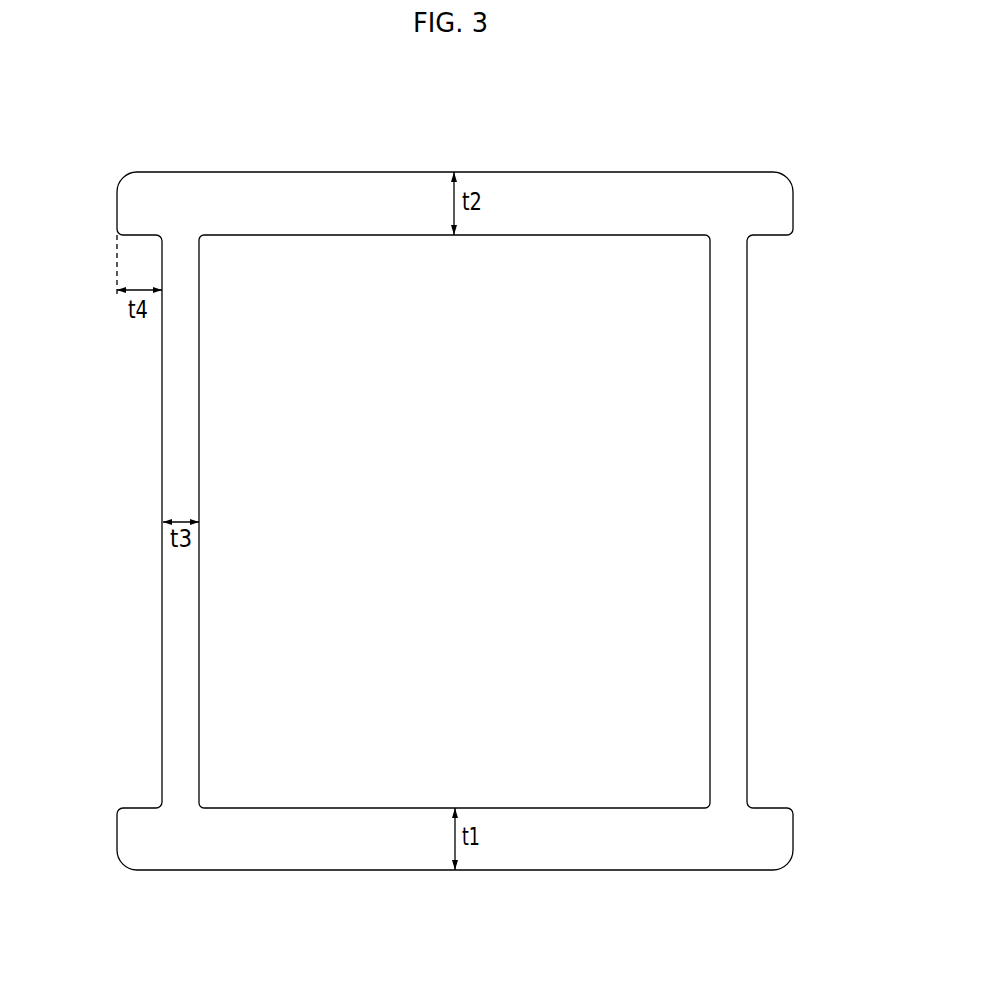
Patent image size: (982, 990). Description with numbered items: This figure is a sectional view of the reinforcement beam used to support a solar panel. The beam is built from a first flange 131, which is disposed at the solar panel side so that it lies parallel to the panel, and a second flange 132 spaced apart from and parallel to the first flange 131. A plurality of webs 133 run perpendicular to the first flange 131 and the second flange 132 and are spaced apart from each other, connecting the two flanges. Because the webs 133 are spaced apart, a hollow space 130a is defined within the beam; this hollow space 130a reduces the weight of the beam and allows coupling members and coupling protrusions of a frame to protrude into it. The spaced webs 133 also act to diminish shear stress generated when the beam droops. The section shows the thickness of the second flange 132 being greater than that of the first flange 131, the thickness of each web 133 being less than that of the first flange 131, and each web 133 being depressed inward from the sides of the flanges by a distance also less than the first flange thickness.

The second flange 132 is at (636, 197).
The first flange 131 is at (577, 842).
The webs 133 is at (178, 436).
The hollow space 130a is at (616, 585).